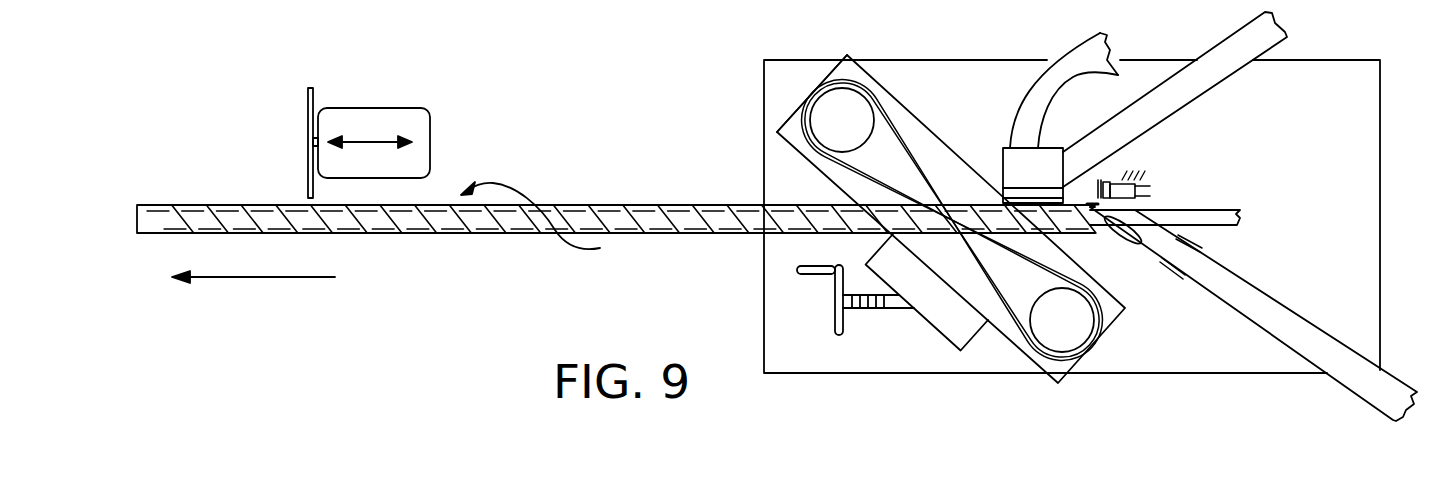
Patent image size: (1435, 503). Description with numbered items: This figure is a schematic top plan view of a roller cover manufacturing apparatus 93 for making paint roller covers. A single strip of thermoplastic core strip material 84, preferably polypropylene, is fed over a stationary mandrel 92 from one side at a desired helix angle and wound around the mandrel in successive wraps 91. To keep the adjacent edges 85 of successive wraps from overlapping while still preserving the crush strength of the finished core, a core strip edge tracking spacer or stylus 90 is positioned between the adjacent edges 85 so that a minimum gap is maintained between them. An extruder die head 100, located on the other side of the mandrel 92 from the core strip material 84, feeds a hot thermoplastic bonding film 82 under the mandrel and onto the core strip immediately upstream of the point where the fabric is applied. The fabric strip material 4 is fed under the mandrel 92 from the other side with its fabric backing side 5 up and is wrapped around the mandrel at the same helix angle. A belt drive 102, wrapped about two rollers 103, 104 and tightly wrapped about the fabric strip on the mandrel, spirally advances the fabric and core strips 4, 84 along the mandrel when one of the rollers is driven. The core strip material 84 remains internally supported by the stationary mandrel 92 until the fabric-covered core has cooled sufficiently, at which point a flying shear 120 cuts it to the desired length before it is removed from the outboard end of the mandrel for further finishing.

The fabric strip material 4 is at (757, 233).
The fabric backing side 5 is at (1213, 58).
The hot thermoplastic bonding film 82 is at (1050, 135).
The core strip material 84 is at (1253, 298).
The adjacent edges of core strip material 85 is at (1097, 212).
The core strip edge tracking spacer or stylus 90 is at (1092, 190).
The wrap of core strip material 91 is at (1135, 220).
The stationary mandrel 92 is at (1208, 213).
The roller cover manufacturing apparatus 93 is at (927, 98).
The extruder die head 100 is at (1007, 163).
The belt drive 102 is at (838, 178).
The roller 103 is at (833, 103).
The roller 104 is at (1057, 330).
The flying shear 120 is at (330, 88).